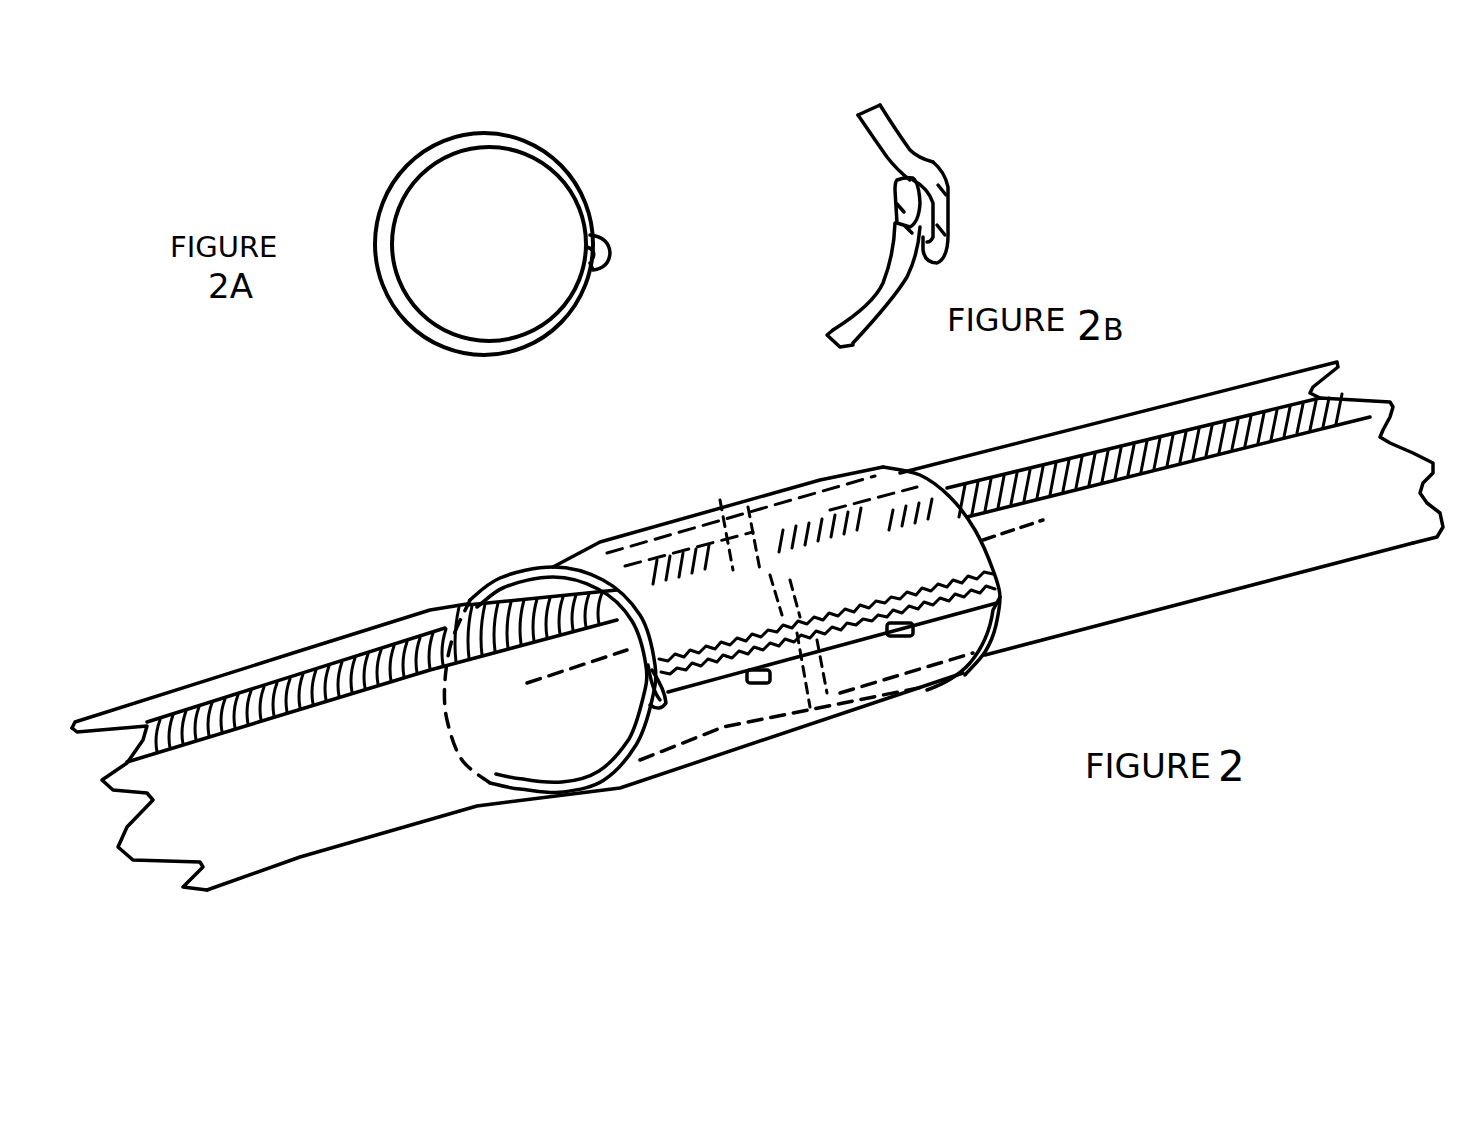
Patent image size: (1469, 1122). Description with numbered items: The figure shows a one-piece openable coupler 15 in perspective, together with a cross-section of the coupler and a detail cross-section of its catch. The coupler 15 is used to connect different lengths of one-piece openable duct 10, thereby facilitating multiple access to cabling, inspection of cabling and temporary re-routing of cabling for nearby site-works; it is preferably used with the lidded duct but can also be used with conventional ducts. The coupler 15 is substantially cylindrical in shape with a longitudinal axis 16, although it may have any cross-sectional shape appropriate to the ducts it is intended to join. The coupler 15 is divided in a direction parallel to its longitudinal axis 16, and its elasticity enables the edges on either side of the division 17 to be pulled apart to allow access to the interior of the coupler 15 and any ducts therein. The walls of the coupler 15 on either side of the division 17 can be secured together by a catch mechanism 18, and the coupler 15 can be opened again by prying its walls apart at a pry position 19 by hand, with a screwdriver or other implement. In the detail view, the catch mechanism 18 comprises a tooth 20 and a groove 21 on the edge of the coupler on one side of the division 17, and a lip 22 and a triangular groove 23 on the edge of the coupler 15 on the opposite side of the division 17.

In FIG. 2, the one-piece openable duct 10 is at (327, 827).
In FIG. 2, the one-piece openable coupler 15 is at (913, 683).
In FIG. 2A, the one-piece openable coupler 15 is at (395, 357).
In FIG. 2B, the one-piece openable coupler 15 is at (875, 95).
In FIG. 2, the longitudinal axis 16 is at (1037, 530).
In FIG. 2, the division 17 is at (583, 797).
In FIG. 2A, the division 17 is at (591, 236).
In FIG. 2B, the division 17 is at (883, 183).
In FIG. 2, the catch mechanism 18 is at (663, 703).
In FIG. 2A, the catch mechanism 18 is at (609, 280).
In FIG. 2B, the catch mechanism 18 is at (946, 150).
In FIG. 2, the pry position 19 is at (767, 687).
In FIG. 2B, the tooth 20 is at (943, 233).
In FIG. 2B, the groove 21 is at (940, 190).
In FIG. 2B, the lip 22 is at (907, 208).
In FIG. 2B, the triangular groove 23 is at (910, 230).